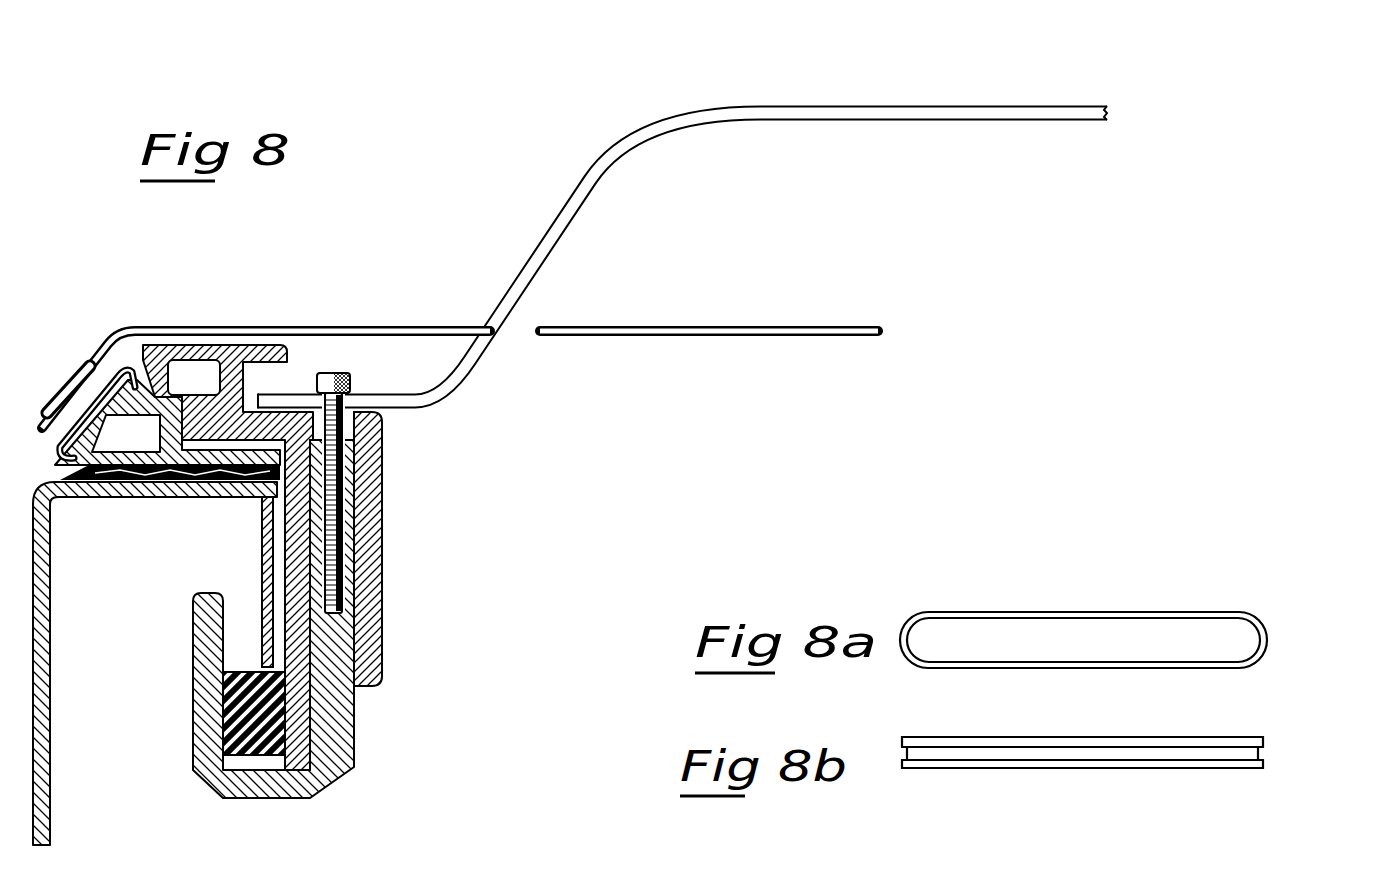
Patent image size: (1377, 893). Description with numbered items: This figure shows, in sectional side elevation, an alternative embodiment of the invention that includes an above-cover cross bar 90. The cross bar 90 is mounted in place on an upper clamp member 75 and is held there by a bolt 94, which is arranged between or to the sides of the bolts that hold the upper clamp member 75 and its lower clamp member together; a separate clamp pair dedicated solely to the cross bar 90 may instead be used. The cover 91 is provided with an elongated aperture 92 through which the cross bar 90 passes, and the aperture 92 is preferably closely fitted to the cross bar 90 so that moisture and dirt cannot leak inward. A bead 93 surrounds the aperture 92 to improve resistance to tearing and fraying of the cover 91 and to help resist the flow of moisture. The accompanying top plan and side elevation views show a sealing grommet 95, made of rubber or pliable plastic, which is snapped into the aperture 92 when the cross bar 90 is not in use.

In FIG. 8, the upper clamp member 75 is at (372, 497).
In FIG. 8, the above-cover cross bar 90 is at (900, 108).
In FIG. 8, the cover 91 is at (710, 326).
In FIG. 8, the elongated aperture 92 is at (527, 340).
In FIG. 8, the bead 93 is at (490, 326).
In FIG. 8, the bolt 94 is at (350, 375).
In FIG. 8A, the sealing grommet 95 is at (1270, 638).
In FIG. 8B, the sealing grommet 95 is at (1235, 737).